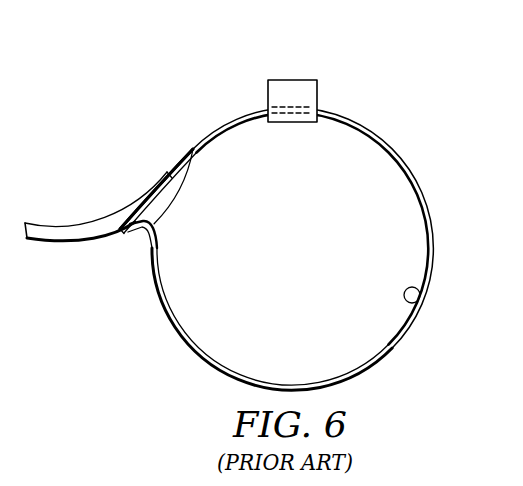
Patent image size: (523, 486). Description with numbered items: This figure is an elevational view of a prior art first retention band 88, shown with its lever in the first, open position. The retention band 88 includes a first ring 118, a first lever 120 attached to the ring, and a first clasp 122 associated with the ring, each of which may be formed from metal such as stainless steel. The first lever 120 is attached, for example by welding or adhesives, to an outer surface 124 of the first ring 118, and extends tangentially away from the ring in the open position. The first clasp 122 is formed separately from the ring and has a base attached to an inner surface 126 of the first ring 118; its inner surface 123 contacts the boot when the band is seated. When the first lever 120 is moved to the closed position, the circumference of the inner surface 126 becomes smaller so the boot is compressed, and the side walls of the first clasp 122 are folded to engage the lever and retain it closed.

The first retention band 88 is at (137, 60).
The first ring 118 is at (393, 131).
The first lever 120 is at (77, 226).
The first clasp 122 is at (299, 73).
The inner surface of the first clasp 123 is at (293, 124).
The outer surface of the first ring 124 is at (193, 144).
The inner surface of the first ring 126 is at (421, 295).